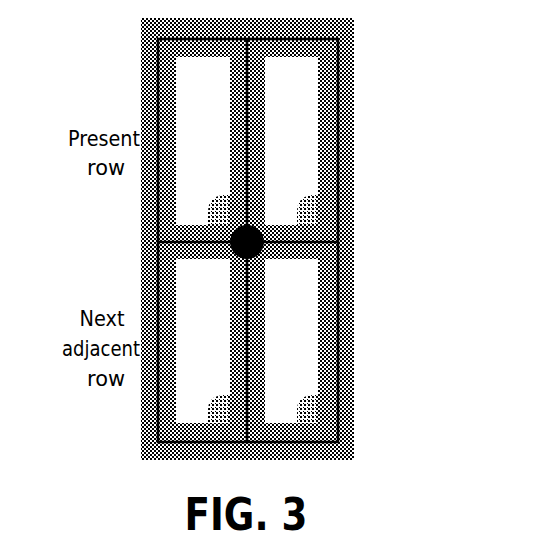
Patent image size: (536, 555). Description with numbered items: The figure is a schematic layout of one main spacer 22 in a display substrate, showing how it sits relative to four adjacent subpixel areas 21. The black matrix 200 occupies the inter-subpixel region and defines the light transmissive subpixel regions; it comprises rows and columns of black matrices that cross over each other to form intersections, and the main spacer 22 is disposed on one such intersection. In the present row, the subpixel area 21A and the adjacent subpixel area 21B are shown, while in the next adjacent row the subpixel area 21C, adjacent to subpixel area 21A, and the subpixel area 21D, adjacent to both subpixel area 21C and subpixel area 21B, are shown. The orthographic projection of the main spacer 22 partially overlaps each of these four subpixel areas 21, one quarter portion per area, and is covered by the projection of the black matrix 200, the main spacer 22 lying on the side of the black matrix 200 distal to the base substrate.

The subpixel area 21 is at (157, 68).
The subpixel area in the first row 21A is at (203, 141).
The subpixel area in the first row 21B is at (291, 141).
The subpixel area in the second row 21C is at (203, 341).
The subpixel area in the second row 21D is at (291, 341).
The black matrix 200 is at (313, 228).
The main spacer 22 is at (262, 253).